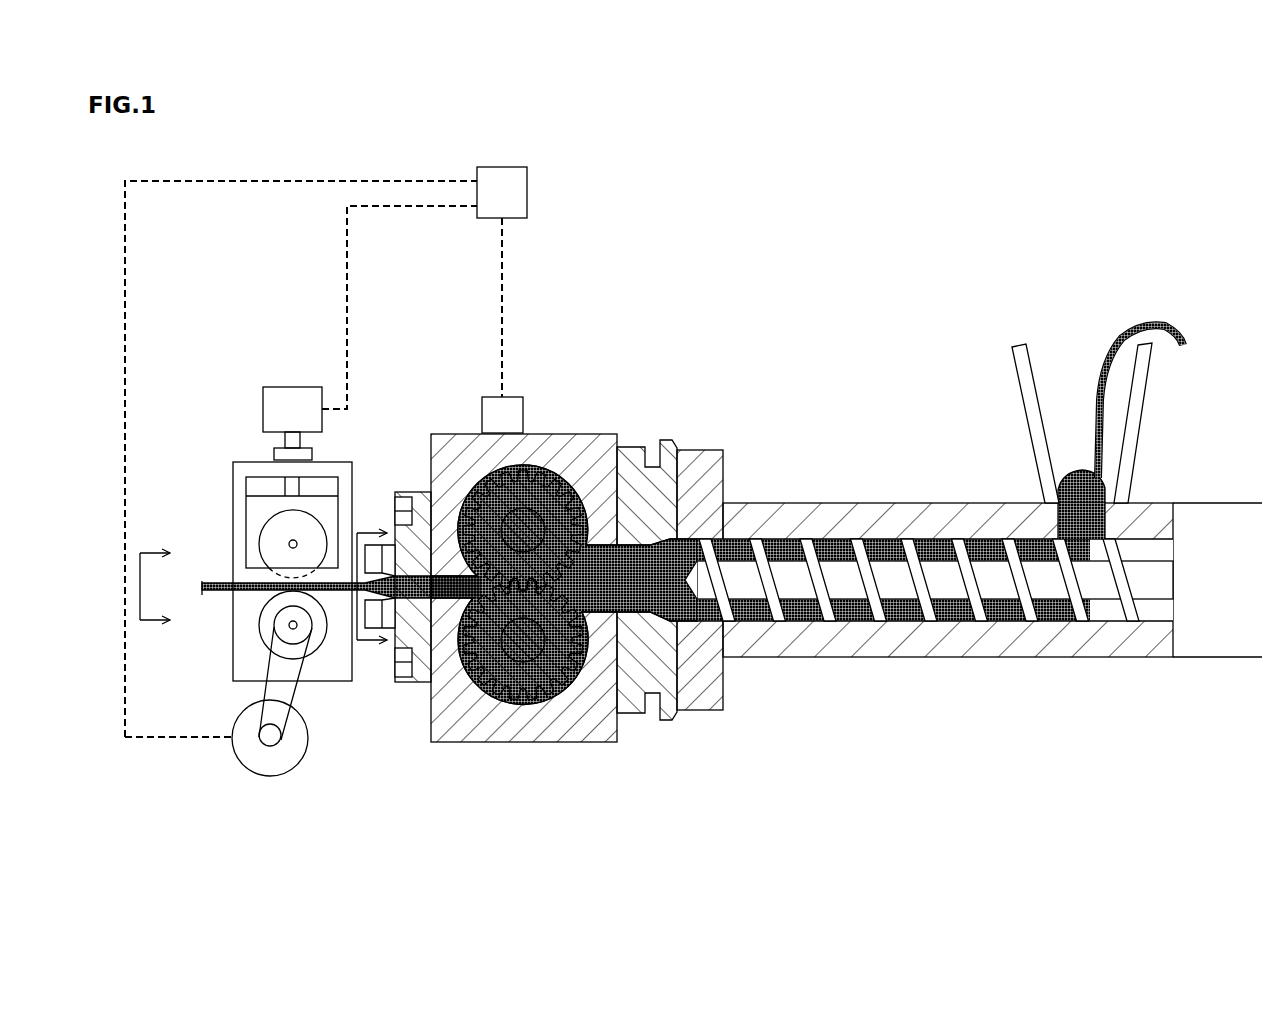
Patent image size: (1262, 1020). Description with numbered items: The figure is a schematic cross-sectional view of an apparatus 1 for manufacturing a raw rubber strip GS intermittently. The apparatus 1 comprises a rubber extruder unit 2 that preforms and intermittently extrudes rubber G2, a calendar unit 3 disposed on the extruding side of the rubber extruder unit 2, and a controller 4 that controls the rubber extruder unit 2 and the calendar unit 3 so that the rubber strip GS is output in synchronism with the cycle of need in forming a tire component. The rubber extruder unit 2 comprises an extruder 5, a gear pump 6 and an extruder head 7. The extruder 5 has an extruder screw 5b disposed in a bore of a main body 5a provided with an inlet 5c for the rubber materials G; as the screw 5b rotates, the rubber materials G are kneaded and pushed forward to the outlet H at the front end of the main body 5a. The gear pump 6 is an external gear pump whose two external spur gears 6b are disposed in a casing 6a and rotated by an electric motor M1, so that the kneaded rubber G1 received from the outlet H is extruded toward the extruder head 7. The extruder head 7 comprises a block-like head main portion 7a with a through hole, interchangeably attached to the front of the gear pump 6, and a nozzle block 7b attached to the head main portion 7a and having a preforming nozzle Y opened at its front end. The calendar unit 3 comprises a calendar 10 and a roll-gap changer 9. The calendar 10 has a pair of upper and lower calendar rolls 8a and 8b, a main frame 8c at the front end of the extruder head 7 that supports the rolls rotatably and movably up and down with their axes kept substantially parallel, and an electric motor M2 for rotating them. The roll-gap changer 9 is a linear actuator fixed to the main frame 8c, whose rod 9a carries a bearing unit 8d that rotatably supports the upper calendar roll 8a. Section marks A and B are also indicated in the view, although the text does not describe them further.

The apparatus for manufacturing a raw rubber strip 1 is at (882, 263).
The rubber extruder unit 2 is at (708, 300).
The calendar unit 3 is at (232, 318).
The controller 4 is at (326, 452).
The extruder 5 is at (846, 547).
The main body 5a is at (905, 522).
The extruder screw 5b is at (988, 580).
The inlet 5c is at (1133, 398).
The gear pump 6 is at (562, 428).
The casing 6a is at (596, 433).
The external spur gears 6b is at (637, 572).
The extruder head 7 is at (404, 498).
The head main portion 7a is at (420, 520).
The nozzle block 7b is at (388, 557).
The upper calendar roll 8a is at (293, 522).
The lower calendar roll 8b is at (317, 635).
The main frame 8c is at (235, 633).
The bearing unit 8d is at (290, 544).
The roll-gap changer 9 is at (263, 377).
The rod 9a is at (280, 446).
The calendar 10 is at (238, 742).
The electric motor M1 is at (508, 420).
The electric motor M2 is at (270, 742).
The rubber materials G is at (1147, 305).
The kneaded rubber G1 is at (700, 448).
The preformed extruded rubber G2 is at (342, 600).
The rubber strip GS is at (228, 598).
The outlet H is at (662, 592).
The preforming nozzle Y is at (367, 630).
The section line A is at (374, 594).
The section line B is at (155, 591).